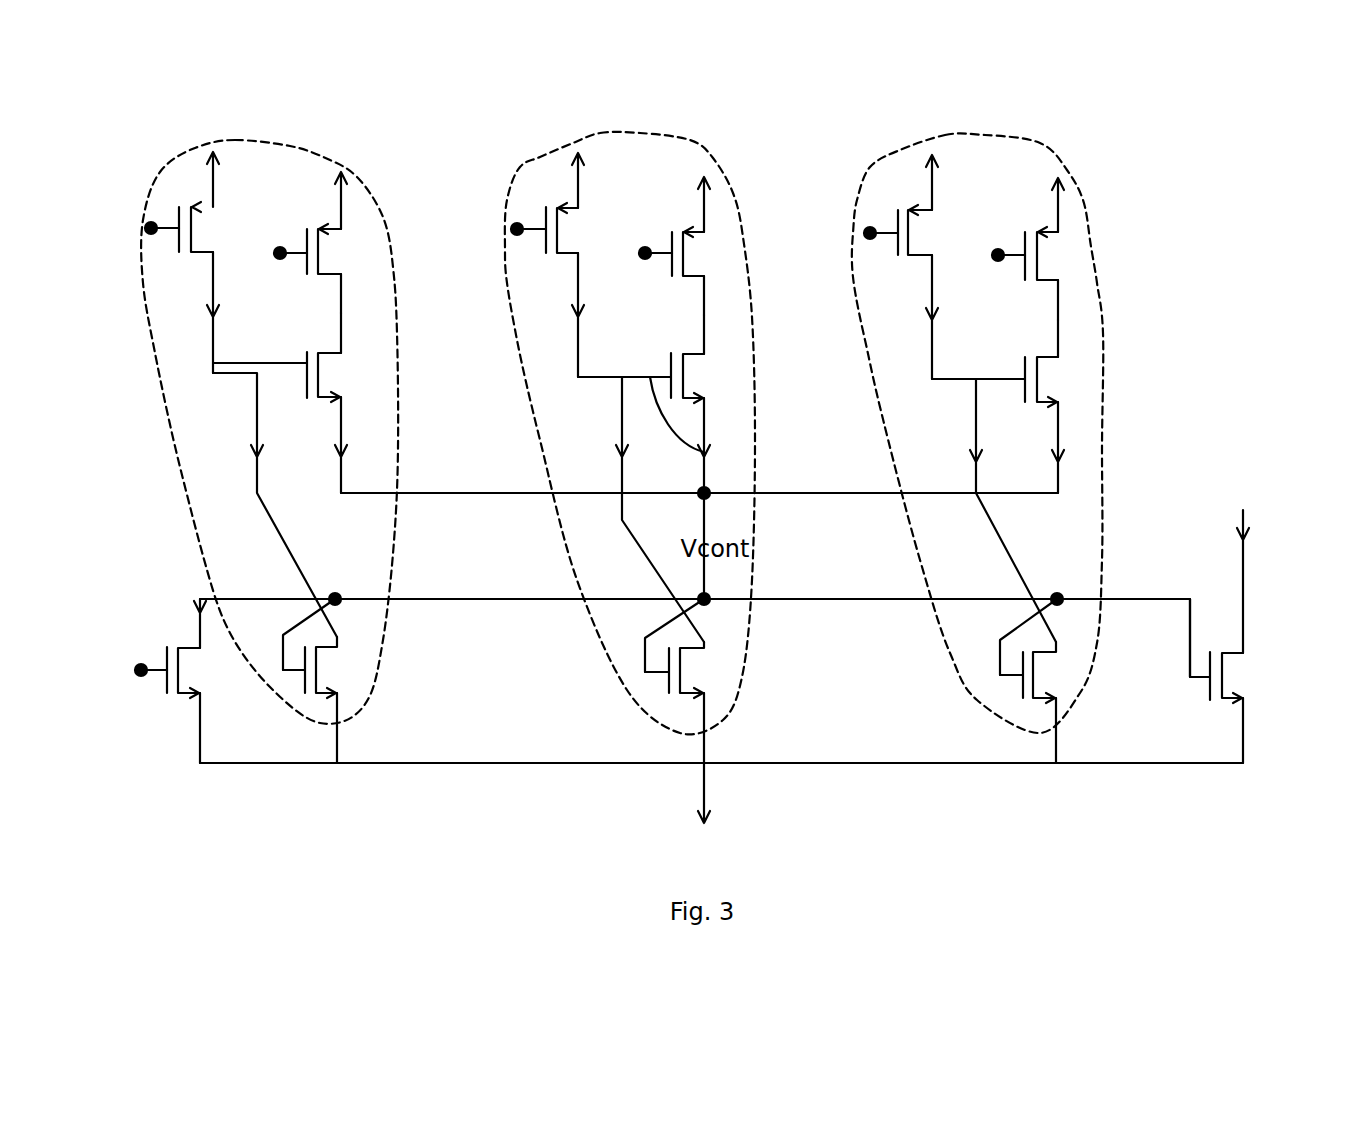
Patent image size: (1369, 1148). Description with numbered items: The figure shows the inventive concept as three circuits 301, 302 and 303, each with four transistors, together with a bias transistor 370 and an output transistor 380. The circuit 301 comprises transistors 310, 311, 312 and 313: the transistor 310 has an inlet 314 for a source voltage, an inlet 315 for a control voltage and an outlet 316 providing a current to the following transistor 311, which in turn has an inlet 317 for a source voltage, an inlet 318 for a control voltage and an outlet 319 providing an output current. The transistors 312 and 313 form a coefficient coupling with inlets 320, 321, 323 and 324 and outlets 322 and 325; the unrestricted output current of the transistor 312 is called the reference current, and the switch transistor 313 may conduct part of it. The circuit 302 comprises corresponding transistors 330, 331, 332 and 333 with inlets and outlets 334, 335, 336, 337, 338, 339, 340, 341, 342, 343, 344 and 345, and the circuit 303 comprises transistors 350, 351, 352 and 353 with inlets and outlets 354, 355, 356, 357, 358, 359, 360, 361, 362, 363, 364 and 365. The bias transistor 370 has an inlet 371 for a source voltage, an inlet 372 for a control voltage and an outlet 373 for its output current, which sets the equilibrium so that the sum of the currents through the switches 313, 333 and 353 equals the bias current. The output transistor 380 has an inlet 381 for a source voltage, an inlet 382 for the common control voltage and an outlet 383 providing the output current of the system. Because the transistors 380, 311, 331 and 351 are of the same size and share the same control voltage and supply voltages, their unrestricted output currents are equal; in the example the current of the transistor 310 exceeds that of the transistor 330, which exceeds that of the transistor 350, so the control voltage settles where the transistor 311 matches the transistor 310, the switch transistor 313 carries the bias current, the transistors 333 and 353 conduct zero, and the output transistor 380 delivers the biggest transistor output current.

The circuit 301 is at (180, 152).
The circuit 302 is at (743, 237).
The circuit 303 is at (1090, 205).
The transistor 310 is at (208, 225).
The transistor 311 is at (332, 670).
The transistor 312 is at (377, 227).
The transistor 313 is at (213, 365).
The inlet 314 is at (213, 190).
The inlet 315 is at (151, 228).
The outlet 316 is at (213, 280).
The inlet 317 is at (337, 635).
The inlet 318 is at (280, 668).
The outlet 319 is at (337, 727).
The inlet 320 is at (335, 253).
The inlet 321 is at (280, 253).
The outlet 322 is at (341, 293).
The inlet 323 is at (341, 327).
The inlet 324 is at (297, 380).
The outlet 325 is at (340, 420).
The transistor 330 is at (570, 225).
The transistor 331 is at (692, 668).
The transistor 332 is at (697, 253).
The transistor 333 is at (690, 380).
The inlet 334 is at (568, 223).
The inlet 335 is at (517, 229).
The outlet 336 is at (578, 280).
The inlet 337 is at (688, 652).
The inlet 338 is at (642, 673).
The outlet 339 is at (700, 722).
The inlet 340 is at (695, 250).
The inlet 341 is at (645, 253).
The outlet 342 is at (707, 297).
The inlet 343 is at (707, 332).
The inlet 344 is at (704, 452).
The outlet 345 is at (704, 427).
The transistor 350 is at (920, 232).
The transistor 351 is at (1043, 668).
The transistor 352 is at (1048, 257).
The transistor 353 is at (1047, 380).
The inlet 354 is at (920, 190).
The inlet 355 is at (870, 233).
The outlet 356 is at (932, 282).
The inlet 357 is at (1058, 652).
The inlet 358 is at (995, 675).
The outlet 359 is at (1052, 727).
The inlet 360 is at (1053, 223).
The inlet 361 is at (998, 255).
The outlet 362 is at (1058, 287).
The inlet 363 is at (1058, 340).
The inlet 364 is at (1000, 379).
The outlet 365 is at (1058, 425).
The bias transistor 370 is at (197, 668).
The inlet 371 is at (200, 617).
The inlet 372 is at (141, 670).
The outlet 373 is at (197, 727).
The output transistor 380 is at (1225, 675).
The inlet 381 is at (1245, 730).
The inlet 382 is at (1193, 673).
The outlet 383 is at (1245, 583).